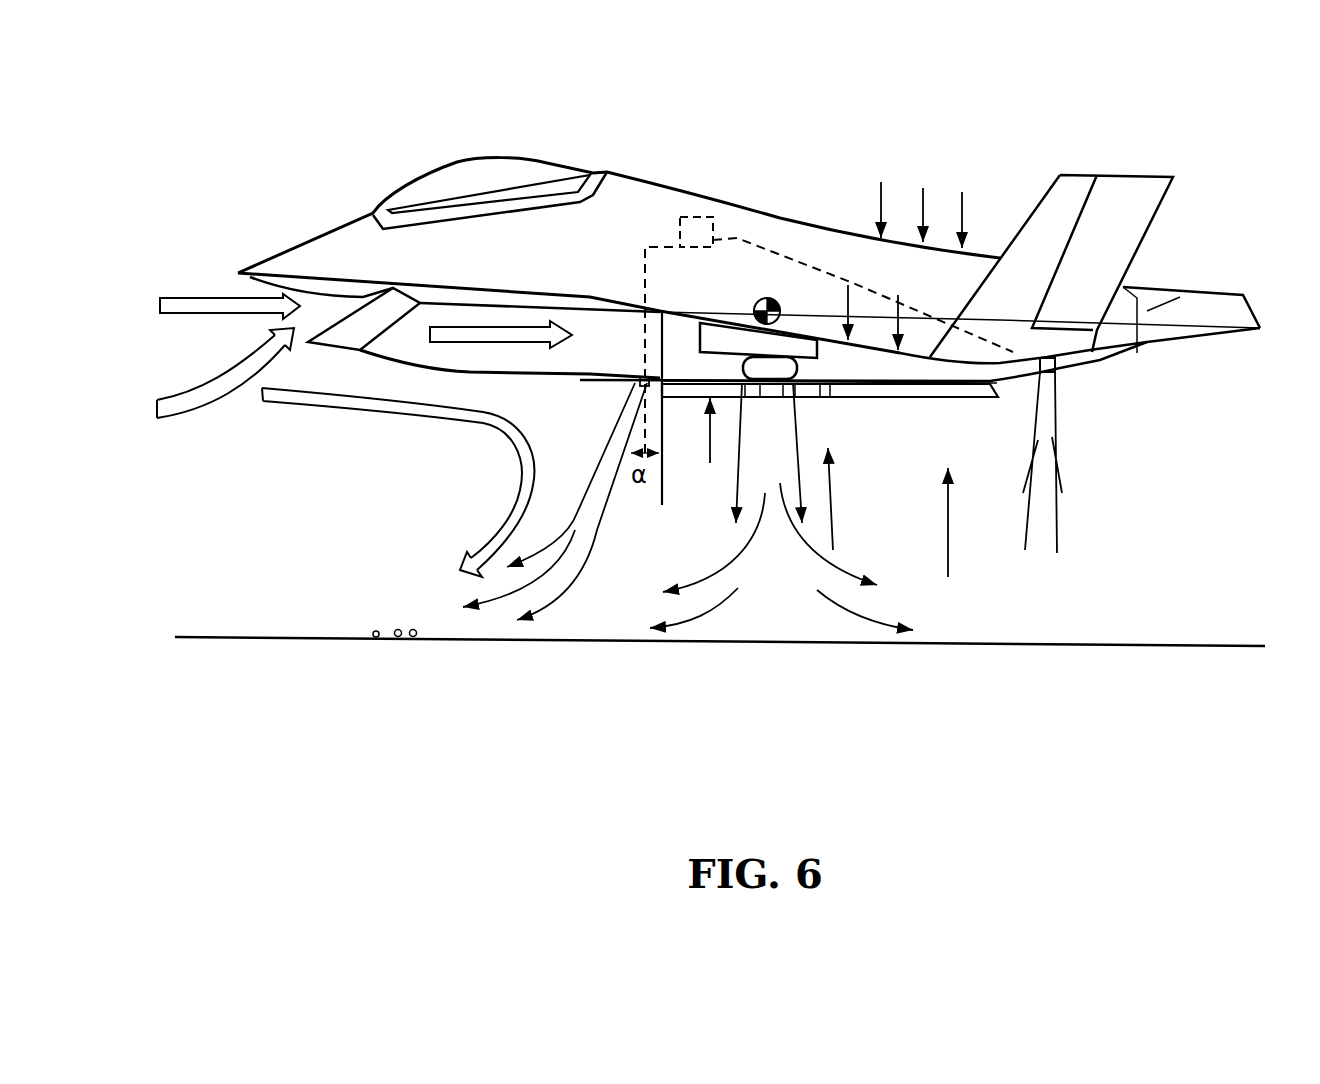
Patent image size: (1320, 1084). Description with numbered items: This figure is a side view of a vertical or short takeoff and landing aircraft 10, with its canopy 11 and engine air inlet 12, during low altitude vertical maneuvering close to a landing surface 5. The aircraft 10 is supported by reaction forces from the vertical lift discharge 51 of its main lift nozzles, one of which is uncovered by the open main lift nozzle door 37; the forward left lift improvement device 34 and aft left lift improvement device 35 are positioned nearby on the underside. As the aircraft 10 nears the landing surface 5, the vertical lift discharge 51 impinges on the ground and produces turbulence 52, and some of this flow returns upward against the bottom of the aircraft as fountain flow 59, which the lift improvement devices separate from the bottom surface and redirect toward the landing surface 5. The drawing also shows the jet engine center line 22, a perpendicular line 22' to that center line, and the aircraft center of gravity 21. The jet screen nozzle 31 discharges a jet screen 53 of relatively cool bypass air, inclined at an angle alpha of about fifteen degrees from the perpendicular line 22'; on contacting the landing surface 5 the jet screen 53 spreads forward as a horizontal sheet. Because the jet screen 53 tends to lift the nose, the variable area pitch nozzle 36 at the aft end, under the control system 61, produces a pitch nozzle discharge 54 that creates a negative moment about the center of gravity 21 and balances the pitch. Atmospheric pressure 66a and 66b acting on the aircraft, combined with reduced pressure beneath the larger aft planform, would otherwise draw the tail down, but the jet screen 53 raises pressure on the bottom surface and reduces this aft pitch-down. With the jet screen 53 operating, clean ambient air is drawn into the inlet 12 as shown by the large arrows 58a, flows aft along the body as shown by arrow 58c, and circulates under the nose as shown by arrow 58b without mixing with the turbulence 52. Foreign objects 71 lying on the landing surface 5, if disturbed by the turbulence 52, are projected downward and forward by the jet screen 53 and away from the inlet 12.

The landing surface 5 is at (1133, 640).
The vertical or short takeoff and landing aircraft 10 is at (623, 237).
The canopy 11 is at (505, 155).
The engine air inlet 12 is at (343, 333).
The aircraft center of gravity 21 is at (770, 299).
The jet engine center line 22 is at (540, 358).
The perpendicular line 22' is at (699, 411).
The jet screen nozzle 31 is at (636, 388).
The forward left lift improvement device 34 is at (803, 390).
The aft left lift improvement device 35 is at (937, 390).
The variable area pitch nozzle 36 is at (1057, 372).
The main lift nozzle door 37 is at (818, 400).
The vertical lift discharge 51 is at (767, 422).
The turbulence 52 is at (835, 605).
The jet screen 53 is at (607, 481).
The pitch nozzle discharge 54 is at (1058, 437).
The large arrows (clean ambient air drawn into inlet) 58a is at (240, 362).
The arrow (air circulating under nose) 58b is at (468, 418).
The arrow (air flowing aft along body) 58c is at (473, 333).
The fountain flow 59 is at (947, 560).
The control system 61 is at (698, 216).
The atmospheric pressure 66a is at (883, 202).
The atmospheric pressure 66b is at (857, 293).
The foreign objects 71 is at (372, 632).